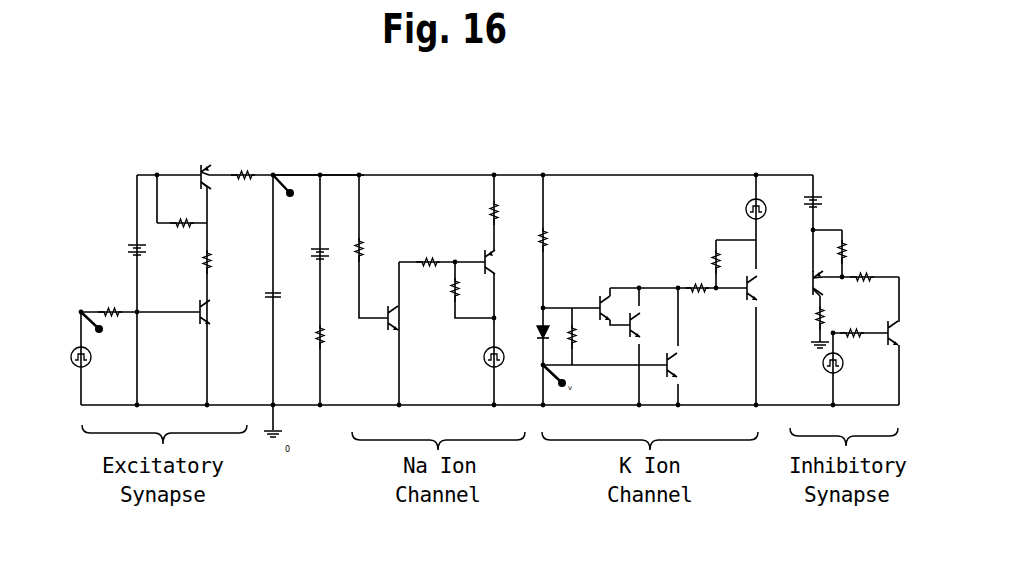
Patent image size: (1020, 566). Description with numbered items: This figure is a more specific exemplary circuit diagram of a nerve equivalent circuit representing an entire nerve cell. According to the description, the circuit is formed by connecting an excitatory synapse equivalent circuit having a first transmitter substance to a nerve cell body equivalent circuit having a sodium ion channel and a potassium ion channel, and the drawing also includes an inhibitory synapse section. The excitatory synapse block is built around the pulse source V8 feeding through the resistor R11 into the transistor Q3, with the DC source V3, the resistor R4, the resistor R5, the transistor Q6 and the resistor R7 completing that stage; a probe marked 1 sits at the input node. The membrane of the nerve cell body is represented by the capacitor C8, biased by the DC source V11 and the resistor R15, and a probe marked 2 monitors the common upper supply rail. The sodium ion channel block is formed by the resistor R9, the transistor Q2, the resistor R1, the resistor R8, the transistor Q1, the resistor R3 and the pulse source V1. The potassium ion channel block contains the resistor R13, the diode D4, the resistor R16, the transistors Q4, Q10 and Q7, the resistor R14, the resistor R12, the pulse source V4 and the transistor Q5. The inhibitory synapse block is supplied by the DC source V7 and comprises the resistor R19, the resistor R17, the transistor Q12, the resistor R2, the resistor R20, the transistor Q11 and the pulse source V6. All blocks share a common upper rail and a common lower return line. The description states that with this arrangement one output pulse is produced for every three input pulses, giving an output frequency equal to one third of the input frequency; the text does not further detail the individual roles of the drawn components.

The voltage probe V1 at excitatory synapse input node 1 is at (81, 312).
The voltage probe V2 at membrane potential node 2 is at (364, 174).
The PNP transistor Q6 is at (198, 171).
The resistor R7 100 ohm R7 is at (243, 171).
The resistor R4 10k R4 is at (182, 220).
The DC source V3 5V V3 is at (126, 242).
The resistor R5 10k R5 is at (220, 264).
The NPN transistor Q3 is at (189, 306).
The resistor R11 1k R11 is at (110, 313).
The pulse source V8 is at (66, 368).
The membrane capacitor C8 50u C8 is at (286, 304).
The DC source V11 1V V11 is at (311, 245).
The resistor R15 10k R15 is at (336, 339).
The resistor R9 100 ohm R9 is at (370, 250).
The resistor R1 10k R1 is at (429, 261).
The NPN transistor Q2 is at (408, 322).
The resistor R8 10k R8 is at (467, 290).
The PNP transistor Q1 is at (503, 262).
The resistor R3 100 ohm R3 is at (509, 214).
The pulse source V1 is at (475, 367).
The resistor R13 100 ohm R13 is at (558, 241).
The diode D4 is at (536, 330).
The resistor R16 5k R16 is at (583, 337).
The NPN transistor Q4 is at (596, 296).
The NPN transistor Q10 is at (653, 325).
The NPN transistor Q7 is at (691, 365).
The resistor R14 10k R14 is at (699, 301).
The resistor R12 10k R12 is at (703, 262).
The pulse source V4 is at (737, 184).
The NPN transistor Q5 is at (760, 288).
The DC source V7 5V V7 is at (827, 201).
The resistor R19 10k R19 is at (853, 248).
The resistor R17 10k R17 is at (862, 279).
The PNP transistor Q12 is at (809, 283).
The resistor R2 500 ohm R2 is at (817, 330).
The resistor R20 1k R20 is at (855, 326).
The NPN transistor Q11 is at (903, 333).
The pulse source V6 is at (813, 374).